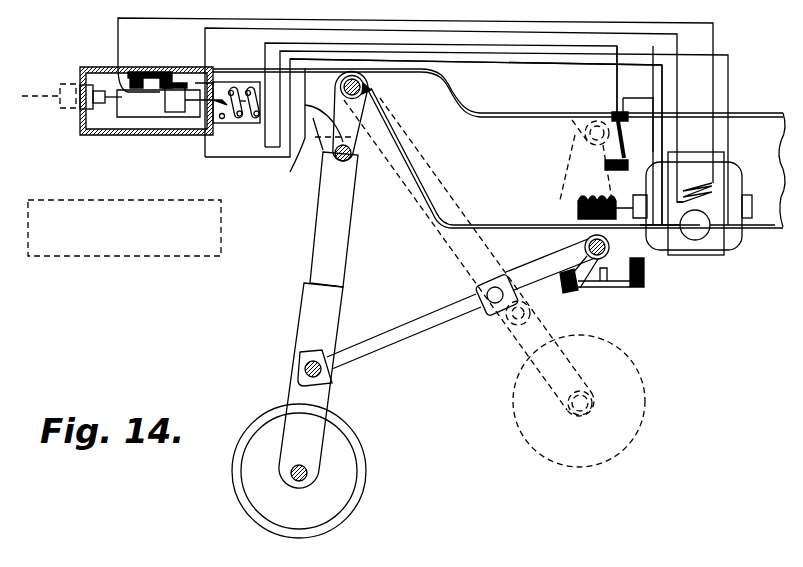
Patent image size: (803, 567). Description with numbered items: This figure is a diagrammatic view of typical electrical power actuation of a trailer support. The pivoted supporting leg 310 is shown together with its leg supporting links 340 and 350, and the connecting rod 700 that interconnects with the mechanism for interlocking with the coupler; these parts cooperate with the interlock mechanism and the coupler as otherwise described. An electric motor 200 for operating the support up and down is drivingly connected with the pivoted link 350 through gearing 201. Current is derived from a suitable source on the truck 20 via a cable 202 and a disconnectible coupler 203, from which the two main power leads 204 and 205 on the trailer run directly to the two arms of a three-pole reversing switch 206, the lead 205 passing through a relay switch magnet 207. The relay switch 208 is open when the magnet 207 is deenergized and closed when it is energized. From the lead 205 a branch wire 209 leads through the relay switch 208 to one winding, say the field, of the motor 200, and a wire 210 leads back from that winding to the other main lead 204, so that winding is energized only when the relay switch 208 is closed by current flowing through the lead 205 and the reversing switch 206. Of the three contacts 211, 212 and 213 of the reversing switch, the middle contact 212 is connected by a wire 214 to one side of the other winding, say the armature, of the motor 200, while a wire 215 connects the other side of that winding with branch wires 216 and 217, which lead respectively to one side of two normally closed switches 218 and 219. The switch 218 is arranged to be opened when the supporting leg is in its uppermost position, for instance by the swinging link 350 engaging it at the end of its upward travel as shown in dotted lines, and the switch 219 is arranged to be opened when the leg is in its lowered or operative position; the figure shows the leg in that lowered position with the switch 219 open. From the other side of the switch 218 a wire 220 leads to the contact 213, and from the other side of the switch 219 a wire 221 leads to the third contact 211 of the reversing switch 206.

The truck 20 is at (96, 262).
The electric motor 200 is at (727, 263).
The gearing 201 is at (572, 204).
The cable 202 is at (57, 75).
The disconnectible coupler 203 is at (78, 112).
The main power lead 204 is at (138, 124).
The main power lead 205 is at (256, 68).
The three-pole reversing switch 206 is at (220, 108).
The relay switch magnet 207 is at (188, 78).
The relay switch 208 is at (176, 68).
The branch wire 209 is at (114, 60).
The wire 210 is at (255, 48).
The third contact 211 is at (222, 120).
The middle contact 212 is at (241, 130).
The contact 213 is at (251, 122).
The wire 214 is at (494, 58).
The wire 215 is at (667, 252).
The branch wire 216 is at (657, 98).
The branch wire 217 is at (666, 275).
The normally closed switch 218 is at (598, 117).
The normally closed switch 219 is at (605, 289).
The wire 220 is at (546, 53).
The wire 221 is at (446, 65).
The pivoted supporting leg 310 is at (306, 316).
The leg supporting link 340 is at (382, 350).
The pivoted link 350 is at (592, 175).
The connecting rod 700 is at (305, 140).